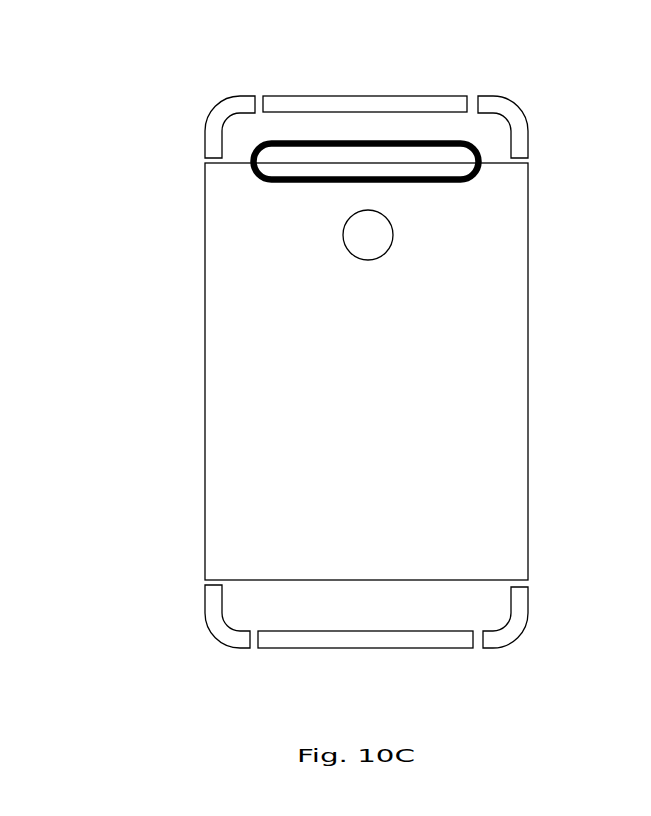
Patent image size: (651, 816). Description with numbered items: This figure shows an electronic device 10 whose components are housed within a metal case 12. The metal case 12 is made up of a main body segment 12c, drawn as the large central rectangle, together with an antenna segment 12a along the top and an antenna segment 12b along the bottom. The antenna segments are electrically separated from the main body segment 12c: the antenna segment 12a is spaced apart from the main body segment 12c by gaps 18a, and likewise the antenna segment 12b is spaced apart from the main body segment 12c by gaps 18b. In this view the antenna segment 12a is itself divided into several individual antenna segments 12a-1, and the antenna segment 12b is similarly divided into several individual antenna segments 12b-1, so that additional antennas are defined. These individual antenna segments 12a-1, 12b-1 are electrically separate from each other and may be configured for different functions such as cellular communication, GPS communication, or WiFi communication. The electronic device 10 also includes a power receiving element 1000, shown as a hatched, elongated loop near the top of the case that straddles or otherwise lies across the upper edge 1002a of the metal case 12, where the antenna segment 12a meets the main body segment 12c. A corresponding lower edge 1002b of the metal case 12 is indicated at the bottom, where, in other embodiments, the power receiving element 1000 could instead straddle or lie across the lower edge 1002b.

The electronic device 10 is at (524, 54).
The metal case 12 is at (510, 658).
The antenna segment 12a is at (368, 95).
The individual antenna segments 12a-1 is at (467, 107).
The antenna segment 12b is at (377, 648).
The individual antenna segments 12b-1 is at (477, 640).
The main body segment 12c is at (205, 371).
The gaps 18a is at (532, 160).
The gaps 18b is at (532, 582).
The power receiving element 1000 is at (294, 184).
The upper edge 1002a is at (493, 159).
The lower edge 1002b is at (500, 581).